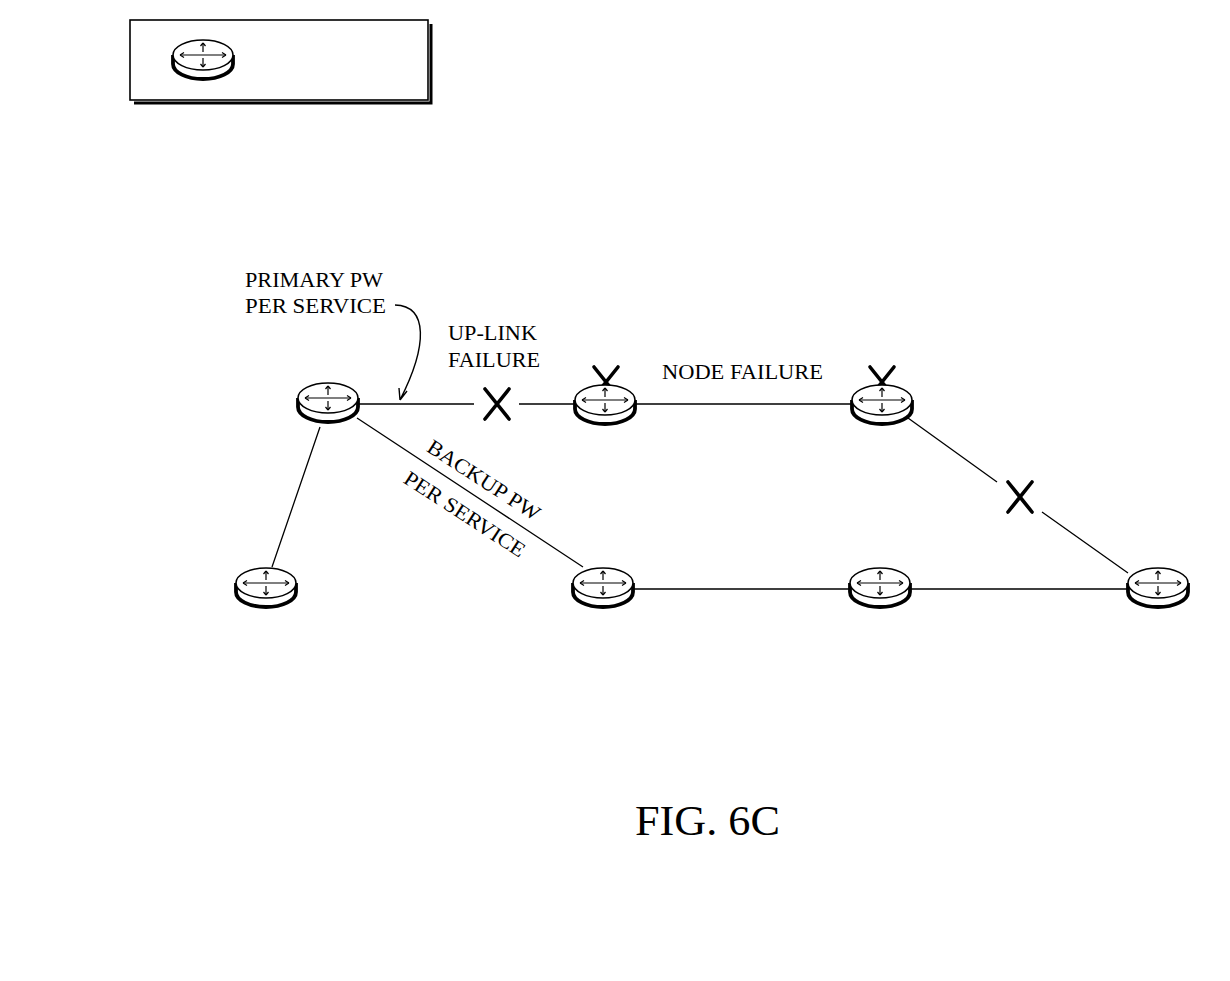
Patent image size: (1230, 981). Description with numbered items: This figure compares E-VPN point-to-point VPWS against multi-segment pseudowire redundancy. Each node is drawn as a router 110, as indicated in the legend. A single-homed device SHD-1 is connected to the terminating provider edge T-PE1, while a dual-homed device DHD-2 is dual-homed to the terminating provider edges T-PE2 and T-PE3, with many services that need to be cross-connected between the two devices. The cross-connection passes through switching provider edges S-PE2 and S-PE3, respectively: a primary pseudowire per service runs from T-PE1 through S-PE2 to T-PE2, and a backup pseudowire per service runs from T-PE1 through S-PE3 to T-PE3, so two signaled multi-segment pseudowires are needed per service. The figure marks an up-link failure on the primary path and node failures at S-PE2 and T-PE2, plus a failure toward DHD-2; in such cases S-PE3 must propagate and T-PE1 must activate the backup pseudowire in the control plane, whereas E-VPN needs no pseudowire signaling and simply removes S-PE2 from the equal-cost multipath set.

The router 110 is at (289, 59).
The terminating provider edge T-PE1 is at (328, 384).
The switching provider edge S-PE2 is at (605, 378).
The terminating provider edge T-PE2 is at (882, 378).
The single-homed device SHD-1 is at (242, 569).
The switching provider edge S-PE3 is at (603, 608).
The terminating provider edge T-PE3 is at (880, 607).
The dual-homed device DHD-2 is at (1157, 607).